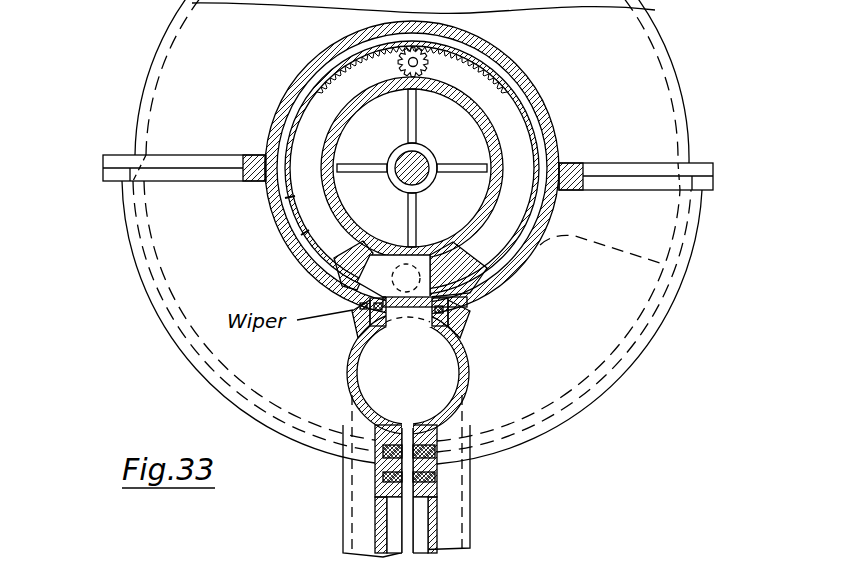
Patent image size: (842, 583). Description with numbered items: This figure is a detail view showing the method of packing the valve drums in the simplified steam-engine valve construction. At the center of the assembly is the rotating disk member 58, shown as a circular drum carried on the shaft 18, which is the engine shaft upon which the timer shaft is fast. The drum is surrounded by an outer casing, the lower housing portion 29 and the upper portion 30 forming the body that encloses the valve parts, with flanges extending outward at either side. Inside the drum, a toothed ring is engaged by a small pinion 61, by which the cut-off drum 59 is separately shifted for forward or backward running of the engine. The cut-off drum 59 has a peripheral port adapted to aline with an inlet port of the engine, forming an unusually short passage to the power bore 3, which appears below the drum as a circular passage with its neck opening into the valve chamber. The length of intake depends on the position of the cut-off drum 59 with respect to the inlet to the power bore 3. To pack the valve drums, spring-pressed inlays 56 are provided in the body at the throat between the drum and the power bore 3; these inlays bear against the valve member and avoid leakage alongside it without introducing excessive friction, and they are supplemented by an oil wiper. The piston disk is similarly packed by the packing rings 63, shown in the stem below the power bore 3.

The power bore 3 is at (453, 370).
The shaft 18 is at (417, 163).
The casing 29 is at (643, 338).
The casing cover 30 is at (620, 101).
The inlay 56 is at (495, 322).
The rotating disk member 58 is at (277, 203).
The cut-off drum 59 is at (455, 257).
The pinion 61 is at (425, 62).
The packing ring 63 is at (435, 482).